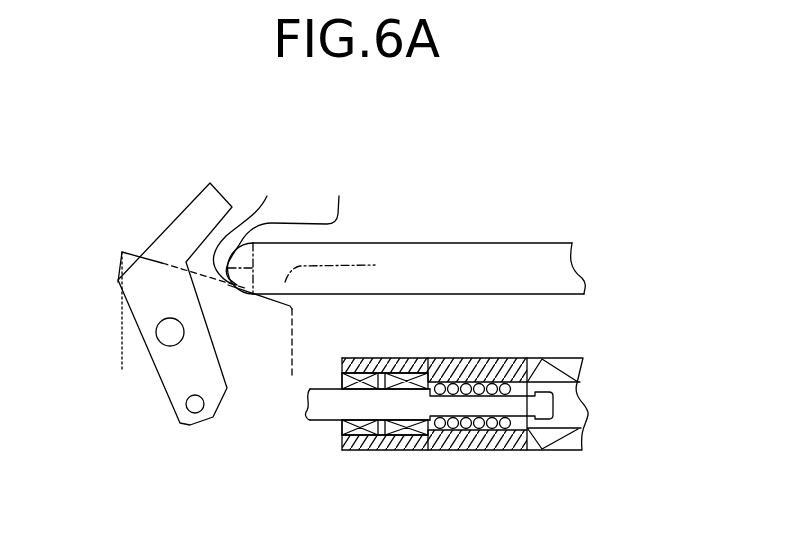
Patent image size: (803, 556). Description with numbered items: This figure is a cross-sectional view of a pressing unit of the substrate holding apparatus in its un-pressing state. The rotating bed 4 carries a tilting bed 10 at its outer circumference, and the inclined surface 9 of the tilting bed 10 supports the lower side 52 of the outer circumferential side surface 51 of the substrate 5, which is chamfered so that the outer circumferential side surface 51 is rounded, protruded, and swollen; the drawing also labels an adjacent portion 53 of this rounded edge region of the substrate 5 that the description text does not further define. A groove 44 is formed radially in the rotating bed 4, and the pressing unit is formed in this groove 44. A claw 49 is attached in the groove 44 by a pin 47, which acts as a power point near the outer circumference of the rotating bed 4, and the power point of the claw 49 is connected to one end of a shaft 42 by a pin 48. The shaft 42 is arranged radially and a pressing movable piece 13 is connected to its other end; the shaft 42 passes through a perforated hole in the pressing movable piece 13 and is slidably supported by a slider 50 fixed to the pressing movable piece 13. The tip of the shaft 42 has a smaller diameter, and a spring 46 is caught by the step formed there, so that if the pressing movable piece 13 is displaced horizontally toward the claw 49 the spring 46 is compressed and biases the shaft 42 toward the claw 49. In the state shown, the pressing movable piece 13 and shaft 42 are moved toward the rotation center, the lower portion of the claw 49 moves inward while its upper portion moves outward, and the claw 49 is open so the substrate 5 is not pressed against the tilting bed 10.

The rotating bed 4 is at (553, 440).
The substrate 5 is at (523, 265).
The inclined surface 9 is at (290, 294).
The tilting bed 10 is at (293, 360).
The pressing movable piece 13 is at (452, 358).
The shaft 42 is at (327, 407).
The groove 44 is at (550, 333).
The spring 46 is at (472, 440).
The pin 47 is at (163, 331).
The pin 48 is at (192, 403).
The claw 49 is at (163, 233).
The slider 50 is at (410, 437).
The outer circumferential side surface 51 is at (368, 164).
The lower side 52 is at (250, 222).
The cover plate 53 is at (292, 222).